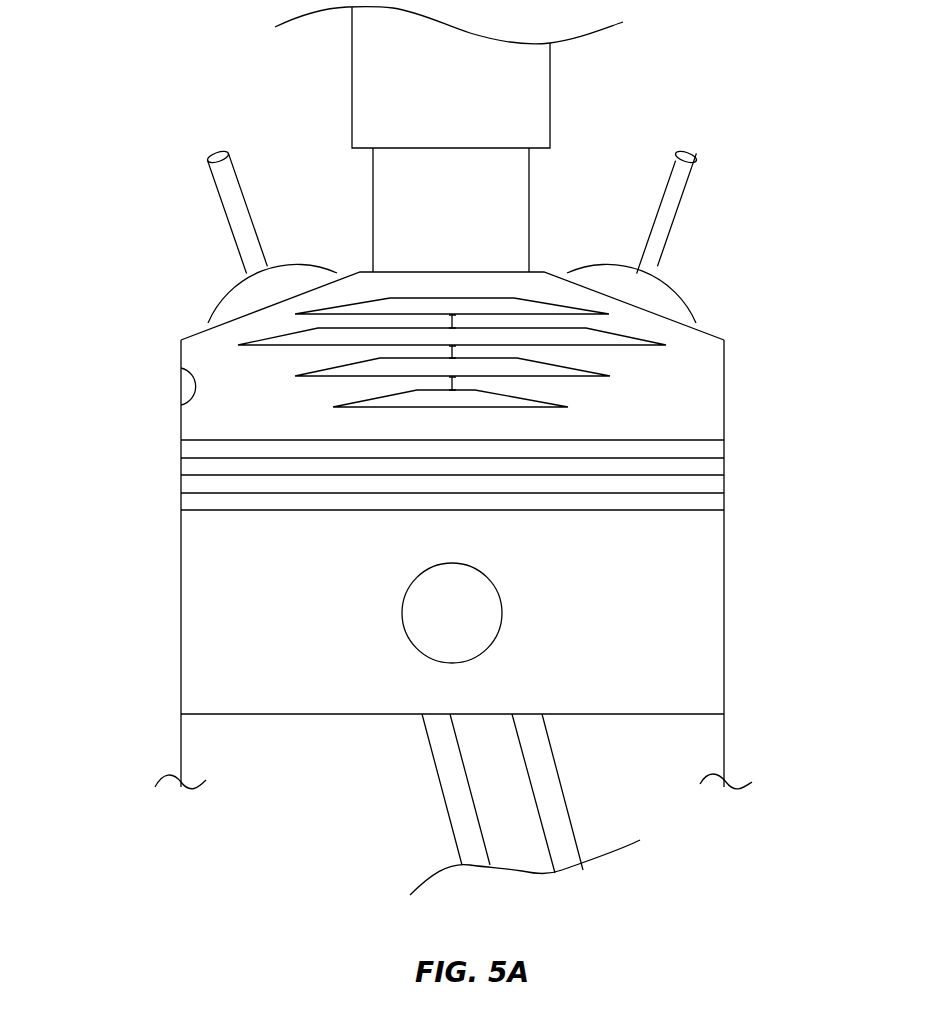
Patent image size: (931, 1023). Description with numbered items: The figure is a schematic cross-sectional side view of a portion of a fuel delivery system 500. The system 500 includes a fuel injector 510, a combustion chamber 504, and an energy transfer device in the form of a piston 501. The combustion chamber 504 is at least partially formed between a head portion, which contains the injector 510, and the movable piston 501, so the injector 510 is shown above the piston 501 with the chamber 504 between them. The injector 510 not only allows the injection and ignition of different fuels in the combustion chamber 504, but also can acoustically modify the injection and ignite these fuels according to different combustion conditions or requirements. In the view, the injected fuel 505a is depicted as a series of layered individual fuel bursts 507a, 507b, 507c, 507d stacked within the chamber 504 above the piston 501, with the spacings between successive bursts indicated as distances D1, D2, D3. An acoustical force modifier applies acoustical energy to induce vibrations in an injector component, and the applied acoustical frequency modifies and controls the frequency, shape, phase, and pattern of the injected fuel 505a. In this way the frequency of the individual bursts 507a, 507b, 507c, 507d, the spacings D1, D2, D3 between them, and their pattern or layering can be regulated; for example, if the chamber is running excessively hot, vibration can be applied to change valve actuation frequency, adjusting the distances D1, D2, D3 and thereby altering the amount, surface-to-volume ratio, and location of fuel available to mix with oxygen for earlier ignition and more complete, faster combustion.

The fuel delivery system 500 is at (100, 205).
The piston 501 is at (697, 617).
The combustion chamber 504 is at (180, 405).
The injected fuel 505a is at (645, 318).
The fuel burst 507a is at (367, 300).
The fuel burst 507b is at (290, 337).
The fuel burst 507c is at (365, 370).
The fuel burst 507d is at (412, 403).
The fuel injector 510 is at (375, 68).
The spacing between bursts D1 is at (454, 318).
The spacing between bursts D2 is at (456, 349).
The spacing between bursts D3 is at (453, 383).